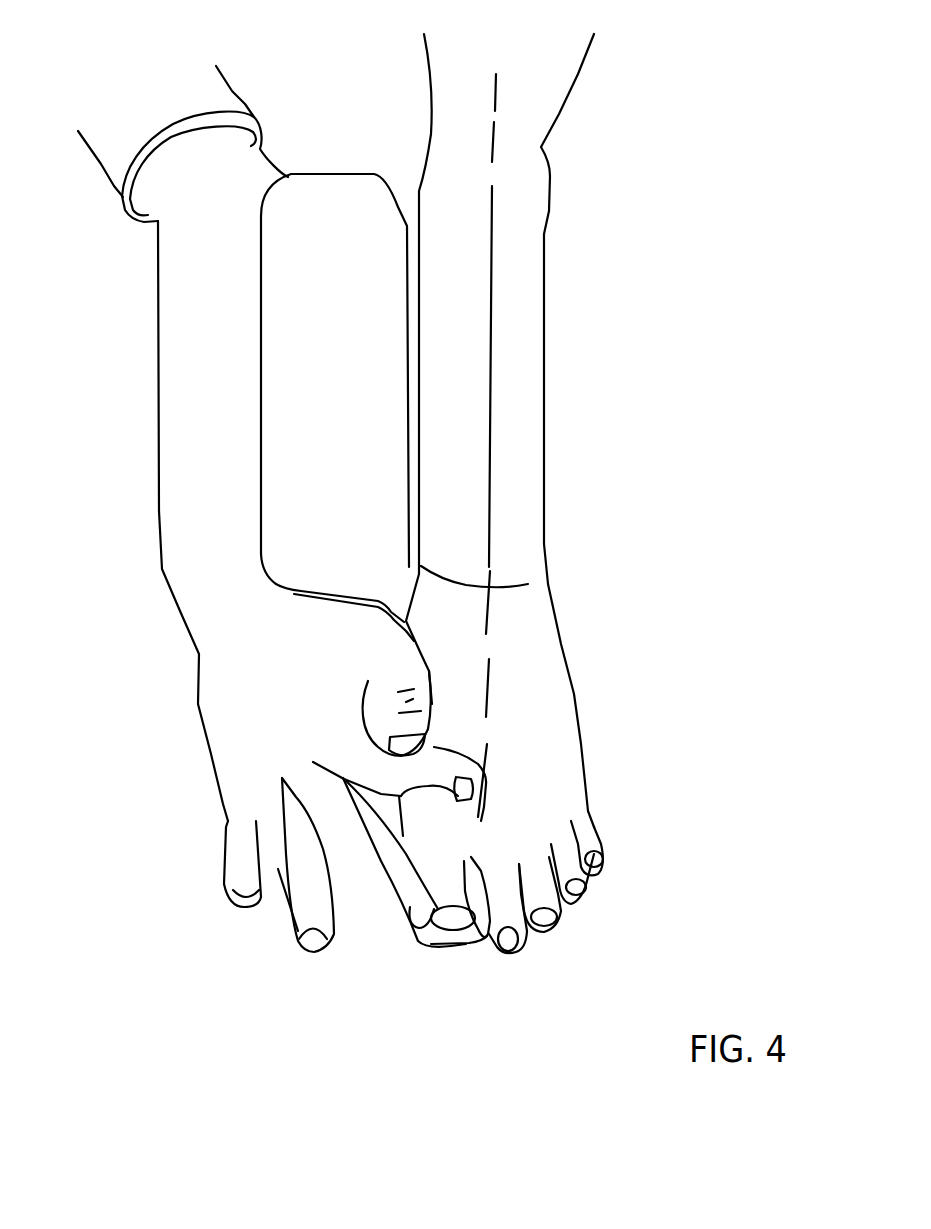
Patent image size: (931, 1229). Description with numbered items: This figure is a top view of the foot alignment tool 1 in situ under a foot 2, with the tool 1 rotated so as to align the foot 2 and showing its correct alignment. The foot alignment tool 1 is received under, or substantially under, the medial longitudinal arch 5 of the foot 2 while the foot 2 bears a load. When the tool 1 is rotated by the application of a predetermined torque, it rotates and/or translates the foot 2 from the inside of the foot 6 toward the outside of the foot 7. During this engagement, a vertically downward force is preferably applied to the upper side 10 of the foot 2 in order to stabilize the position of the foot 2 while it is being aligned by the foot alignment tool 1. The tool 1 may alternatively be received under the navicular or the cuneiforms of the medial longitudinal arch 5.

The foot alignment tool 1 is at (332, 182).
The foot 2 is at (557, 783).
The medial longitudinal arch 5 is at (437, 672).
The inside of the foot 6 is at (443, 733).
The outside of the foot 7 is at (573, 720).
The upper side of the foot 10 is at (497, 710).